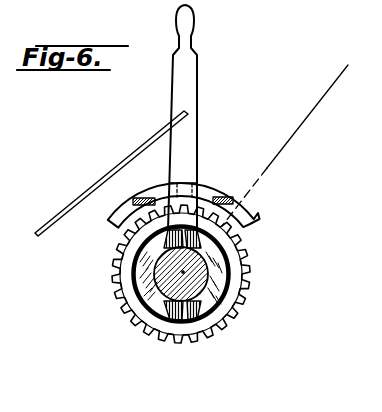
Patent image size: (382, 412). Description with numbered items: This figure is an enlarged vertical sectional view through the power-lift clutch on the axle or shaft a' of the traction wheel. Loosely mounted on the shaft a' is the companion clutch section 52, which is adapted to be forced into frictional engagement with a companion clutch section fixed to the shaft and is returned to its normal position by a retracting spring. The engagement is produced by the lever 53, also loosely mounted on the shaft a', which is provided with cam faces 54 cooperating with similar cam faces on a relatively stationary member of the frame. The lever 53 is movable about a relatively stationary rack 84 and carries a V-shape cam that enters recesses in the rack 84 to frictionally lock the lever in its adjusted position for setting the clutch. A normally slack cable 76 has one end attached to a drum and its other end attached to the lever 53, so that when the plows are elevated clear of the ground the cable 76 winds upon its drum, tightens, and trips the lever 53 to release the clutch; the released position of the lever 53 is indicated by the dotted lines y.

The lever 53 is at (176, 93).
The cable 76 is at (107, 180).
The rack 84 is at (212, 190).
The cam faces 54 is at (200, 236).
The companion clutch section 52 is at (243, 287).
The axle or shaft a' is at (121, 290).
The dotted lines y is at (305, 122).